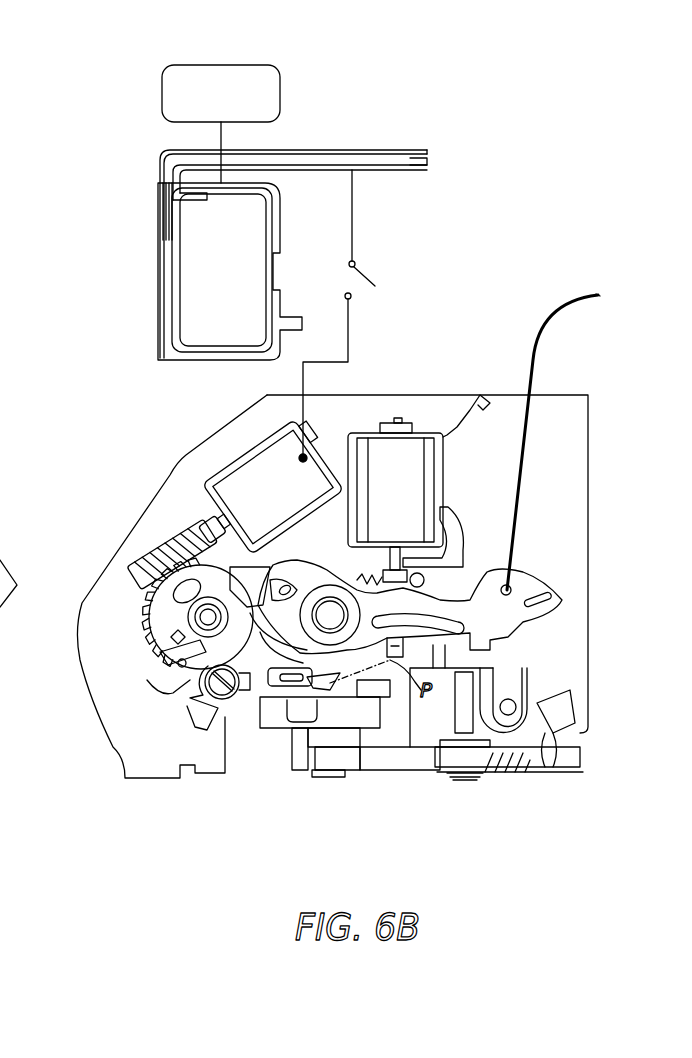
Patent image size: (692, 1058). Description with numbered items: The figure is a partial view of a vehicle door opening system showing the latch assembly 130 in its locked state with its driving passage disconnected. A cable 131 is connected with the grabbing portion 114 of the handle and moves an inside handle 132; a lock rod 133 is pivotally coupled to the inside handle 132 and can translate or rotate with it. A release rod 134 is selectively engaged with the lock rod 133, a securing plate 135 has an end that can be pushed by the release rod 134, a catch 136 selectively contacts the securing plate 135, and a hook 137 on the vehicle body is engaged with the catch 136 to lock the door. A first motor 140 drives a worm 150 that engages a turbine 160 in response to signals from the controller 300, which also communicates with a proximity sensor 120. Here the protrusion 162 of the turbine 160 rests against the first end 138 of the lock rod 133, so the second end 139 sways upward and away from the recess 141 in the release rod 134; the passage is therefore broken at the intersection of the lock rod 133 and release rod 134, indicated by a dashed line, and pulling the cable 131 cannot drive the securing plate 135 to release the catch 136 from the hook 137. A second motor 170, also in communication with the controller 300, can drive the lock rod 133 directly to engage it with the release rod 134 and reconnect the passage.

The controller 300 is at (240, 103).
The proximity sensor 120 is at (278, 282).
The latch assembly 130 is at (398, 372).
The cable 131 is at (546, 315).
The grabbing portion 114 is at (639, 298).
The inside handle 132 is at (503, 617).
The lock rod 133 is at (239, 700).
The release rod 134 is at (307, 760).
The securing plate 135 is at (332, 760).
The catch 136 is at (498, 767).
The hook 137 is at (462, 773).
The first end 138 is at (165, 685).
The second end 139 is at (327, 677).
The first motor 140 is at (292, 498).
The recess 141 is at (298, 712).
The worm 150 is at (160, 552).
The turbine 160 is at (157, 602).
The protrusion 162 is at (160, 665).
The second motor 170 is at (418, 497).